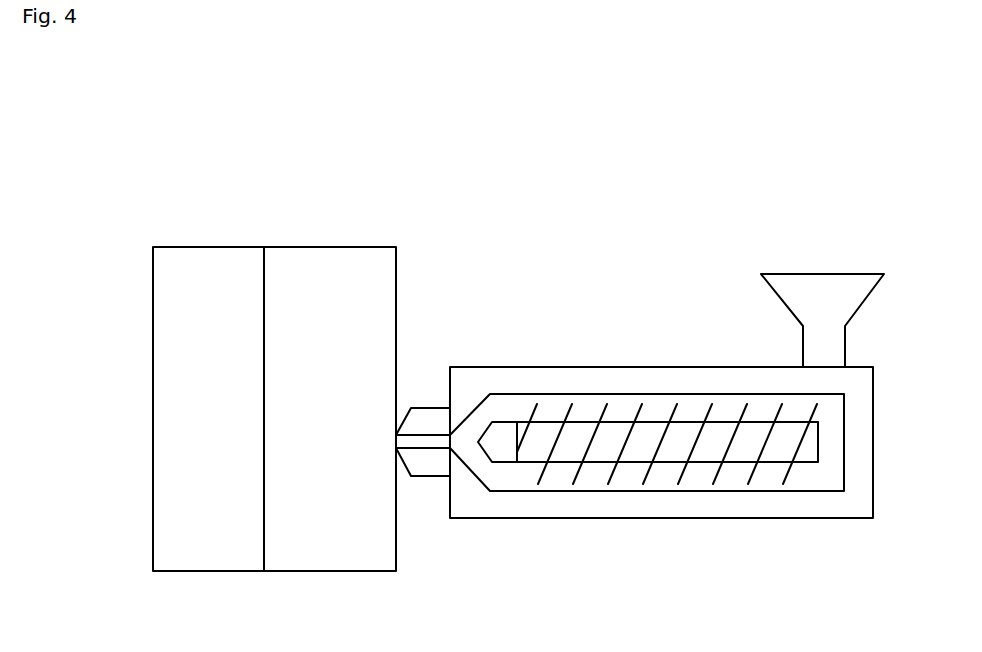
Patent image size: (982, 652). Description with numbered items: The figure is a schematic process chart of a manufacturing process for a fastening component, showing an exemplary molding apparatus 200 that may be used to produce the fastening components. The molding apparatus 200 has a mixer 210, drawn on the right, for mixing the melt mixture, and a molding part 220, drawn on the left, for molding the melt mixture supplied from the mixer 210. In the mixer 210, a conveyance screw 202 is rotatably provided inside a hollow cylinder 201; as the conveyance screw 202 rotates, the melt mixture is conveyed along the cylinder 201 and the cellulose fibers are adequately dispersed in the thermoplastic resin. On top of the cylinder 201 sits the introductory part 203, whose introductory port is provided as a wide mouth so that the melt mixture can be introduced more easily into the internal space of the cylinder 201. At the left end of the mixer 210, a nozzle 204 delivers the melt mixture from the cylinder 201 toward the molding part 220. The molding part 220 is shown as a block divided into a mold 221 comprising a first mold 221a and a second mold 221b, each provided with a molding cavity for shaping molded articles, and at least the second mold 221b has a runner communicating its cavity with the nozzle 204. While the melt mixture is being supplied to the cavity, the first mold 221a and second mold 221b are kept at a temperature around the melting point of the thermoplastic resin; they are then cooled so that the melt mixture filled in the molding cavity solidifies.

The molding apparatus 200 is at (90, 95).
The mixer 210 is at (652, 149).
The molding part 220 is at (298, 149).
The mold 221 is at (284, 371).
The first mold 221a is at (223, 253).
The second mold 221b is at (312, 255).
The hollow cylinder 201 is at (478, 378).
The conveyance screw 202 is at (610, 437).
The introductory part 203 is at (818, 285).
The nozzle 204 is at (425, 463).